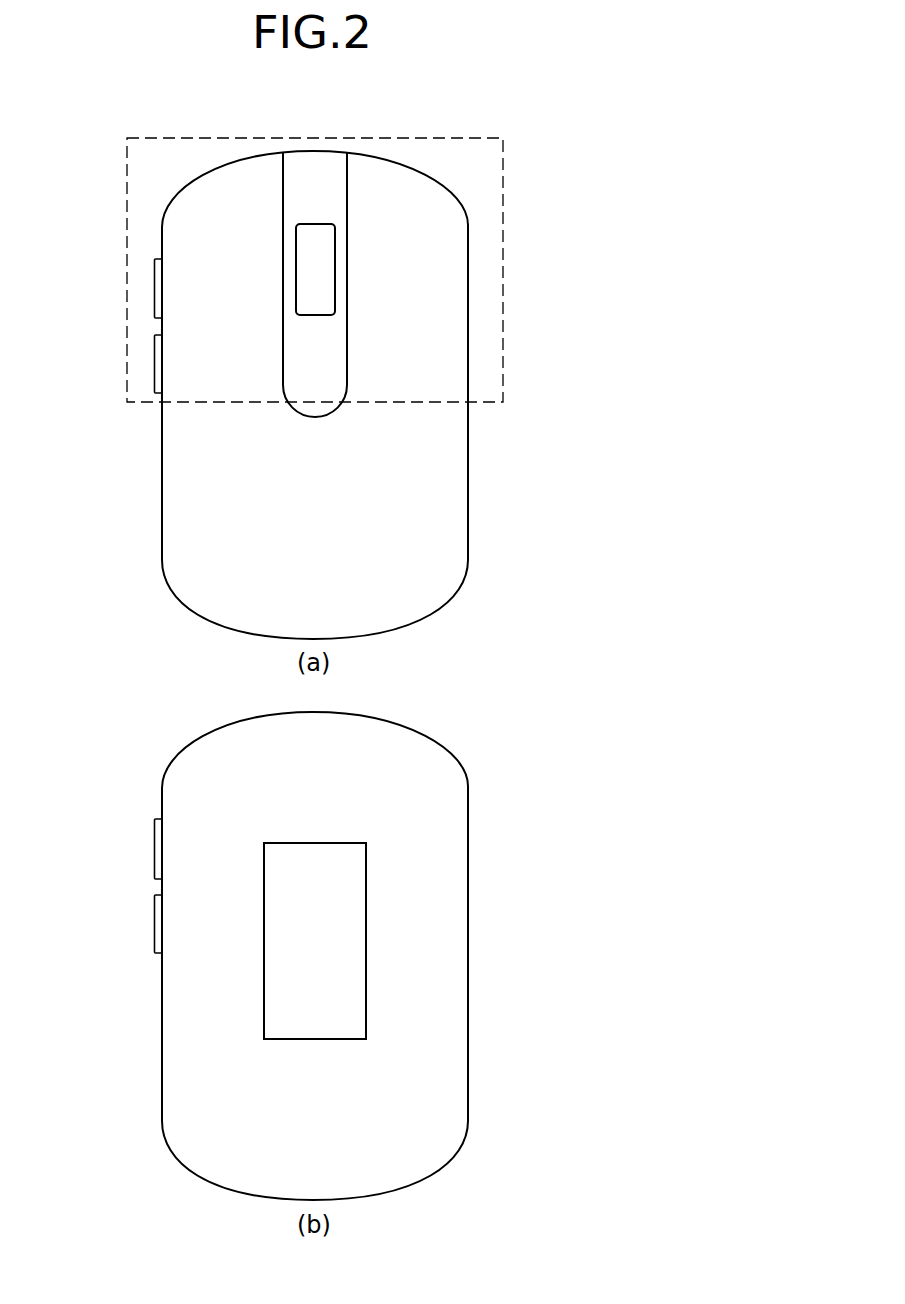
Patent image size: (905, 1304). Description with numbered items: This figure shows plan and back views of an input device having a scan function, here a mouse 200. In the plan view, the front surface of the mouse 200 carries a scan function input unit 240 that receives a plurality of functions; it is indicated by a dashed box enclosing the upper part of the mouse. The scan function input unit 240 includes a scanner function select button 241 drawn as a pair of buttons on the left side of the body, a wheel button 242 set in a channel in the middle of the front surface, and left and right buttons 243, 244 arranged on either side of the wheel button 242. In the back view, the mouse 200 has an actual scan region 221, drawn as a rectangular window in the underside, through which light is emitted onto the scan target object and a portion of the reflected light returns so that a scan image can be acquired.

The mouse 200 is at (468, 477).
The scan function input unit 240 is at (503, 201).
The scanner function select button 241 is at (155, 288).
The wheel button 242 is at (315, 242).
The left button 243 is at (231, 187).
The right button 244 is at (398, 187).
The actual scan region 221 is at (366, 942).